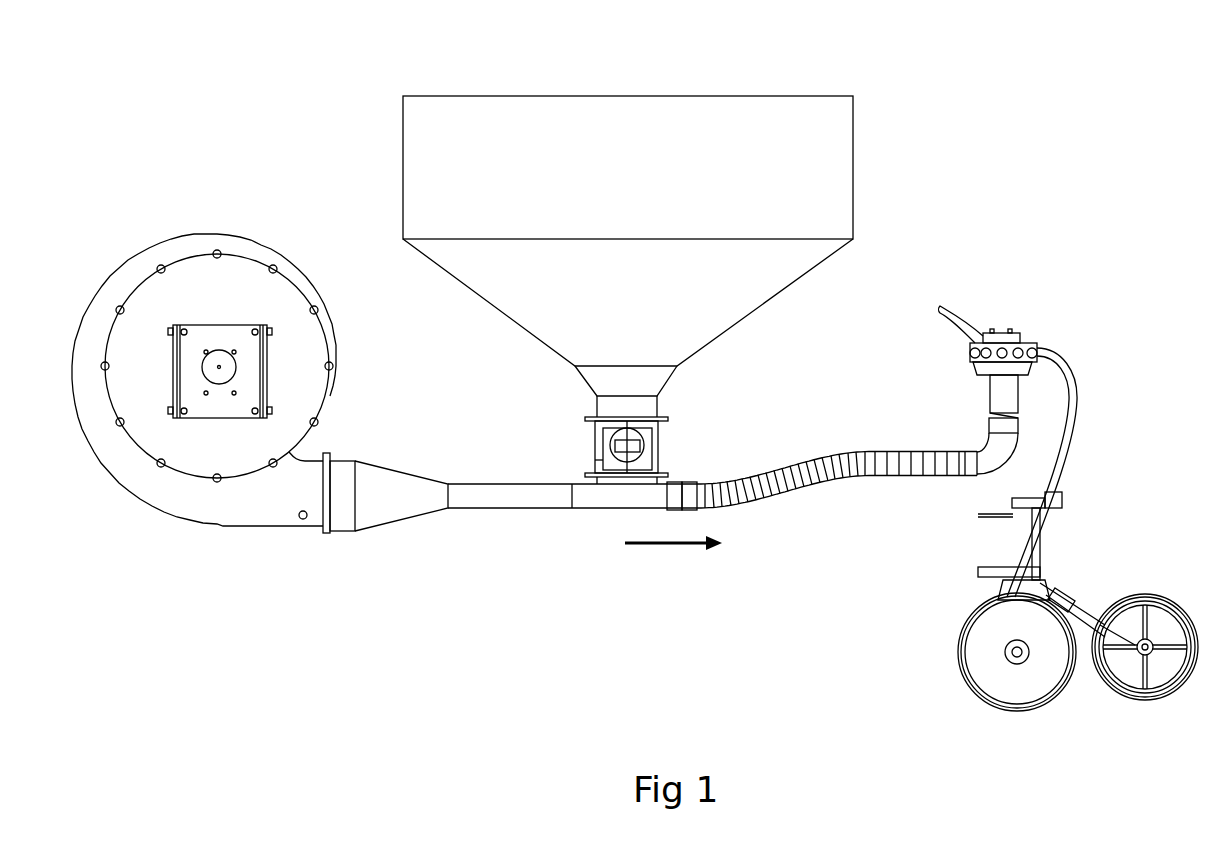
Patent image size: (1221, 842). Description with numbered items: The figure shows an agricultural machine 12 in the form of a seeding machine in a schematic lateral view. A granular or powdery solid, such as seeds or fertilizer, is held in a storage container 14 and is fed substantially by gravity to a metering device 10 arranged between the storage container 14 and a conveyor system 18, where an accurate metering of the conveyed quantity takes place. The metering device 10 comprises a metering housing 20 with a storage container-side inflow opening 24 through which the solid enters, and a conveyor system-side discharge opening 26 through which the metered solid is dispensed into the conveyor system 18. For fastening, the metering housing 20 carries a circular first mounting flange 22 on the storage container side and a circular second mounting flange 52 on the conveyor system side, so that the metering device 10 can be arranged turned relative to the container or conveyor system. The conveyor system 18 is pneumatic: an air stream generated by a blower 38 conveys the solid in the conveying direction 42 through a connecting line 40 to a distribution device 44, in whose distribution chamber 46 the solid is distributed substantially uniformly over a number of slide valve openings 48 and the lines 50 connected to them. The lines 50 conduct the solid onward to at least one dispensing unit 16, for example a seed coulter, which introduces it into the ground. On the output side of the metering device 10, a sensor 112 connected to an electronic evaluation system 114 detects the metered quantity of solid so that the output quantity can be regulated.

The metering device 10 is at (542, 432).
The agricultural machine 12 is at (272, 138).
The storage container 14 is at (818, 143).
The dispensing unit 16 is at (1119, 578).
The conveyor system 18 is at (455, 548).
The metering housing 20 is at (655, 442).
The first mounting flange 22 is at (592, 418).
The inflow opening 24 is at (676, 426).
The discharge opening 26 is at (586, 460).
The blower 38 is at (188, 453).
The connecting line 40 is at (585, 497).
The conveying direction 42 is at (652, 560).
The distribution device 44 is at (1028, 312).
The distribution chamber 46 is at (997, 335).
The slide valve openings 48 is at (945, 311).
The lines 50 is at (1080, 350).
The second mounting flange 52 is at (657, 473).
The sensor 112 is at (1036, 504).
The electronic evaluation system 114 is at (1062, 494).